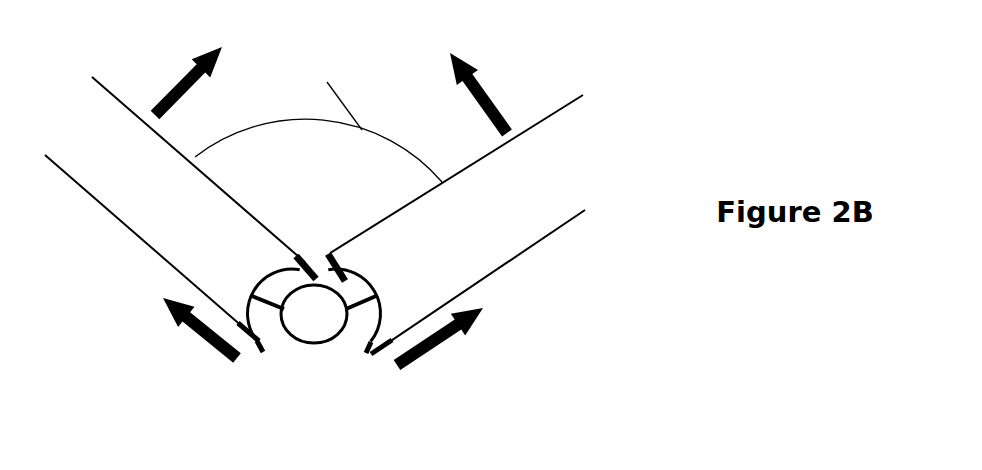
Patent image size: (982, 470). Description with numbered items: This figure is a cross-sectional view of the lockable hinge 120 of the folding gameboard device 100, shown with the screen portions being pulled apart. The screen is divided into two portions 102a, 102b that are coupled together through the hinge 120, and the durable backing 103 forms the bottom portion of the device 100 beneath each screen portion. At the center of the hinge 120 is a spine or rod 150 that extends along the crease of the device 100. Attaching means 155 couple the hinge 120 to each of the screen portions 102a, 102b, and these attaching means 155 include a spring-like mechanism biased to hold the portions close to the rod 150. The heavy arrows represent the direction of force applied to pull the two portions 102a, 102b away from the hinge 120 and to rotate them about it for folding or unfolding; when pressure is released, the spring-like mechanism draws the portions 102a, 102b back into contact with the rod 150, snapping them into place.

The gameboard device 100 is at (645, 71).
The first screen portion 102a is at (112, 214).
The second screen portion 102b is at (522, 255).
The backing 103 is at (113, 97).
The lockable hinge 120 is at (352, 398).
The rod 150 is at (320, 328).
The attaching means 155 is at (355, 303).